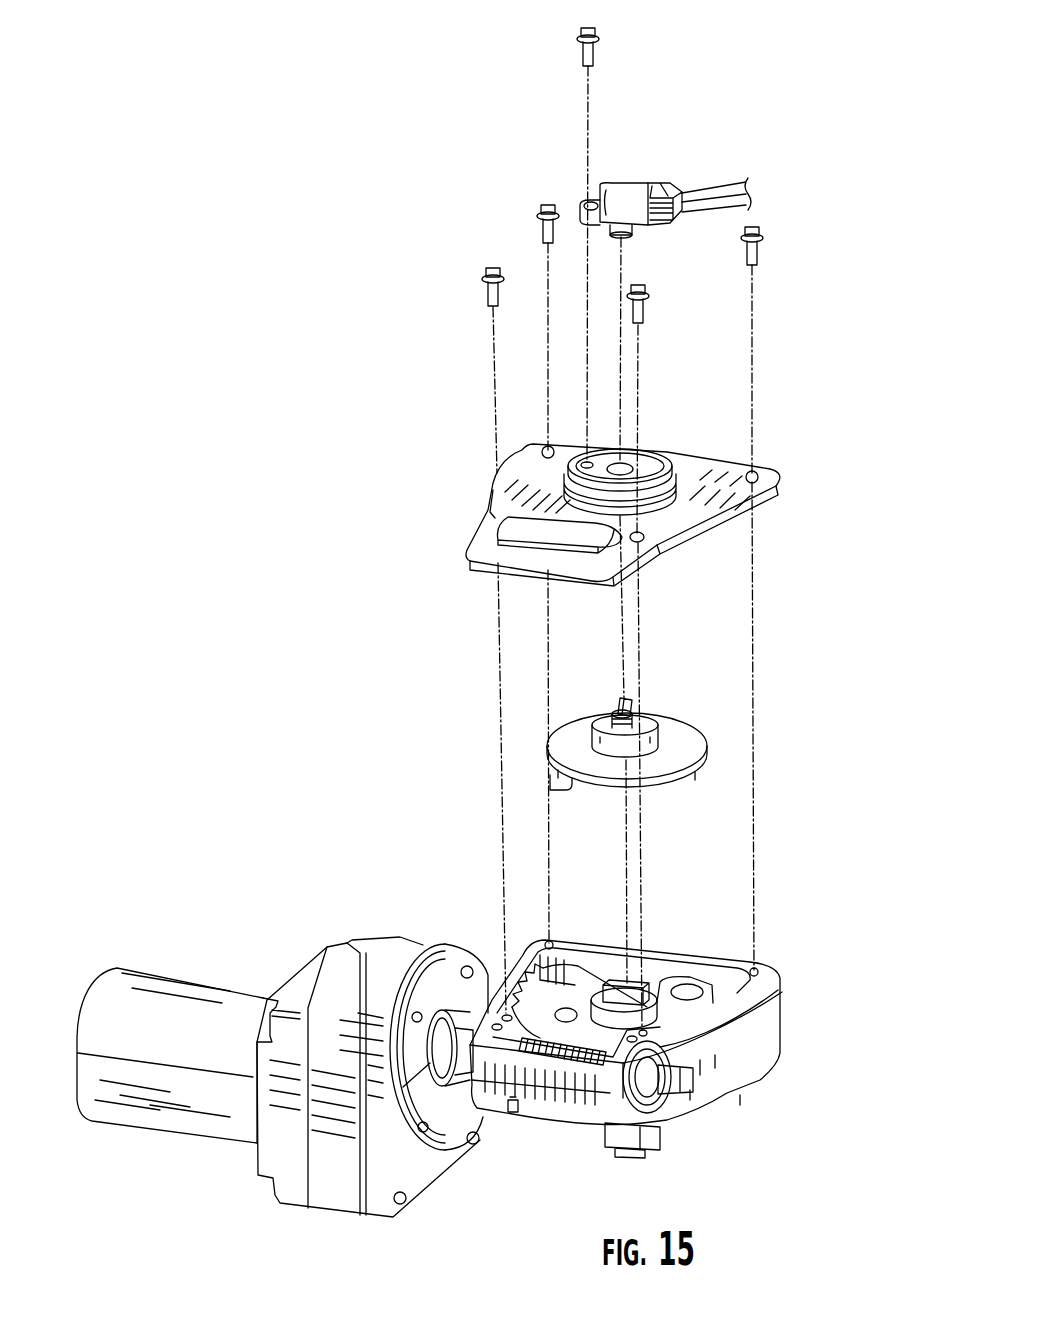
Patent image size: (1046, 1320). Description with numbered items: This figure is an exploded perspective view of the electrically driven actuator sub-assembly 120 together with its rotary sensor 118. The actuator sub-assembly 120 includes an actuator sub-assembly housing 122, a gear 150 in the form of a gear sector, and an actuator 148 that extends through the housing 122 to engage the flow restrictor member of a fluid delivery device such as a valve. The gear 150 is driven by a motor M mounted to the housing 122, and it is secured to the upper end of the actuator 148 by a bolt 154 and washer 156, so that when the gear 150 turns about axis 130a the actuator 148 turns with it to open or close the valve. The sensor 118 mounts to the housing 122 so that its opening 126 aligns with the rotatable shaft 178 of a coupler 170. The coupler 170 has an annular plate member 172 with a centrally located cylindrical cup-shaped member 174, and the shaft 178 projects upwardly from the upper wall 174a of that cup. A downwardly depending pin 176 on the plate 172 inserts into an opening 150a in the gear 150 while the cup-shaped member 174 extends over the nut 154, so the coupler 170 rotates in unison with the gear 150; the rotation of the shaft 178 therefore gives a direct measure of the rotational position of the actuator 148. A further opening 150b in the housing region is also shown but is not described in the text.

The sensor 118 is at (663, 183).
The opening 126 is at (620, 238).
The axis 130a is at (624, 845).
The coupler 170 is at (600, 719).
The annular plate member 172 is at (708, 745).
The cylindrical cup-shaped member 174 is at (590, 737).
The upper wall 174a is at (608, 722).
The pin 176 is at (560, 787).
The shaft 178 is at (629, 700).
The gear 150 is at (548, 945).
The opening 150a is at (567, 1008).
The housing hole 150b is at (675, 983).
The bolt 154 is at (630, 970).
The washer 156 is at (657, 1003).
The actuator 148 is at (612, 1130).
The actuator sub-assembly housing 122 is at (670, 996).
The actuator sub-assembly 120 is at (282, 1039).
The motor M is at (238, 977).